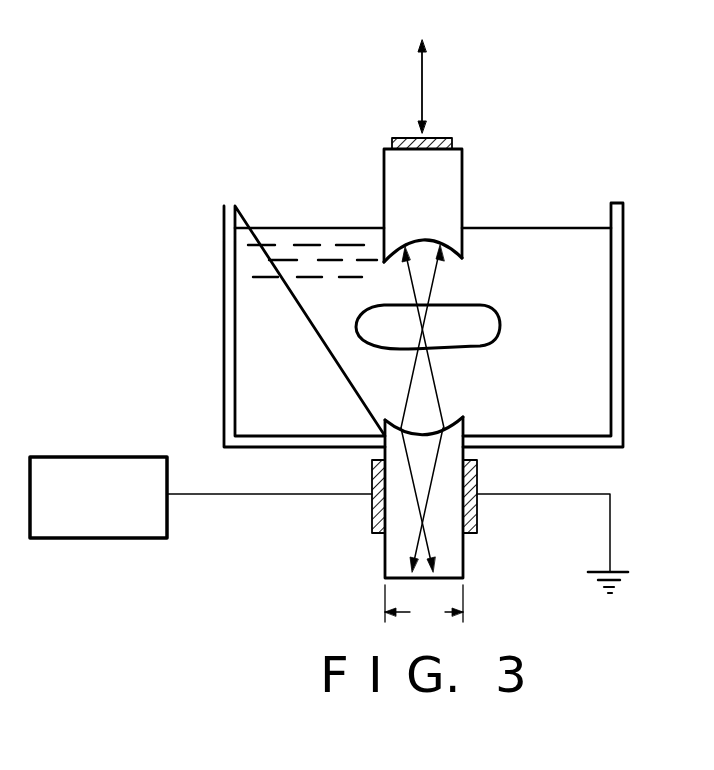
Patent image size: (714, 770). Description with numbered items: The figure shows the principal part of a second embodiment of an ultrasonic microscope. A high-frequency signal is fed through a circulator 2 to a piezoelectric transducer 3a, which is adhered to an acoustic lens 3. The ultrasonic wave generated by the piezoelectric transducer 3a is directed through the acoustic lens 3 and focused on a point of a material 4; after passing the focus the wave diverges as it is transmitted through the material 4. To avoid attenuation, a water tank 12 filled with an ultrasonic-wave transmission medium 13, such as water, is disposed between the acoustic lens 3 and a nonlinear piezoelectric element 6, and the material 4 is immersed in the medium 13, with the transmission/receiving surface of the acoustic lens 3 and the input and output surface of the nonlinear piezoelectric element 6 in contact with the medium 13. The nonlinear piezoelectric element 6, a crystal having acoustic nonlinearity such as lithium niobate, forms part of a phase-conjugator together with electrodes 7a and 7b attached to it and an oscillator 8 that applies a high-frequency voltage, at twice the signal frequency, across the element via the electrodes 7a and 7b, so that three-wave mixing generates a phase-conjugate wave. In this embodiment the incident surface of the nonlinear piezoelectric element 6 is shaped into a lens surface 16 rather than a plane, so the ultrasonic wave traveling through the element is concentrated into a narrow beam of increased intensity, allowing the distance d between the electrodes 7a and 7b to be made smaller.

The circulator 2 is at (411, 70).
The acoustic lens 3 is at (462, 187).
The piezoelectric transducer 3a is at (452, 141).
The material 4 is at (497, 317).
The nonlinear piezoelectric element 6 is at (464, 574).
The electrode 7a is at (371, 468).
The electrode 7b is at (478, 469).
The oscillator 8 is at (101, 456).
The water tank 12 is at (623, 229).
The ultrasonic-wave transmission medium 13 is at (558, 238).
The lens surface 16 is at (418, 434).